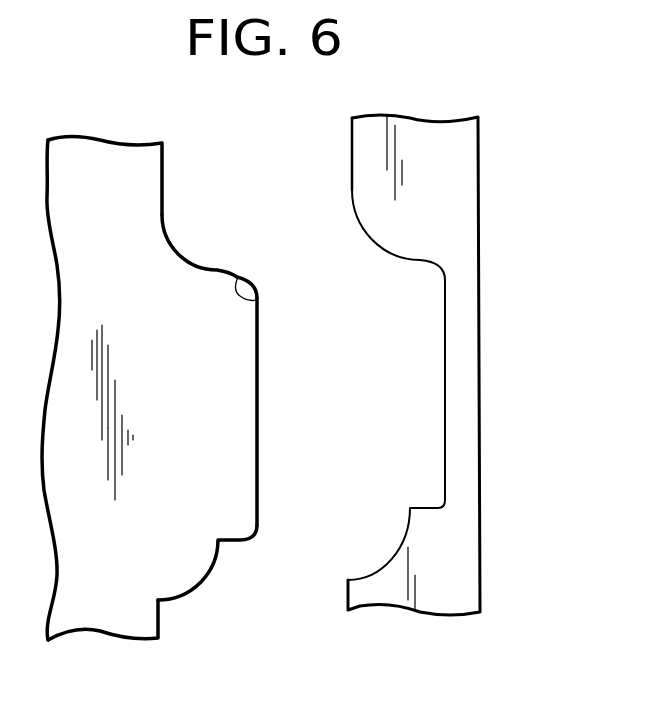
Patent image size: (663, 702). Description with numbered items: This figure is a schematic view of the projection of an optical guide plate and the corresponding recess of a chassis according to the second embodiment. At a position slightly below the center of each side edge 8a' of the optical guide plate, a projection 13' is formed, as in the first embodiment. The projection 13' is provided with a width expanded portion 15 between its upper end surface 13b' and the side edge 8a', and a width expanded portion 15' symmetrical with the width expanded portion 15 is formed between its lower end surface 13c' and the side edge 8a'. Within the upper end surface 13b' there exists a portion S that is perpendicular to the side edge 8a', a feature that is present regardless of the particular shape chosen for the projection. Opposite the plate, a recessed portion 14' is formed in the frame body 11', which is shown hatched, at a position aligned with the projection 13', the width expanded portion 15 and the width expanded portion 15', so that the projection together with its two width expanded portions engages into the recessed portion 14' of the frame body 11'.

The side edge 8a' is at (146, 393).
The width expanded portion 15 is at (109, 390).
The width expanded portion 15' is at (121, 469).
The upper end surface 13b' is at (234, 248).
The portion perpendicular to the side edge S is at (257, 300).
The projection 13' is at (291, 411).
The lower end surface 13c' is at (223, 568).
The frame body 11' is at (459, 365).
The recessed portion 14' is at (396, 385).